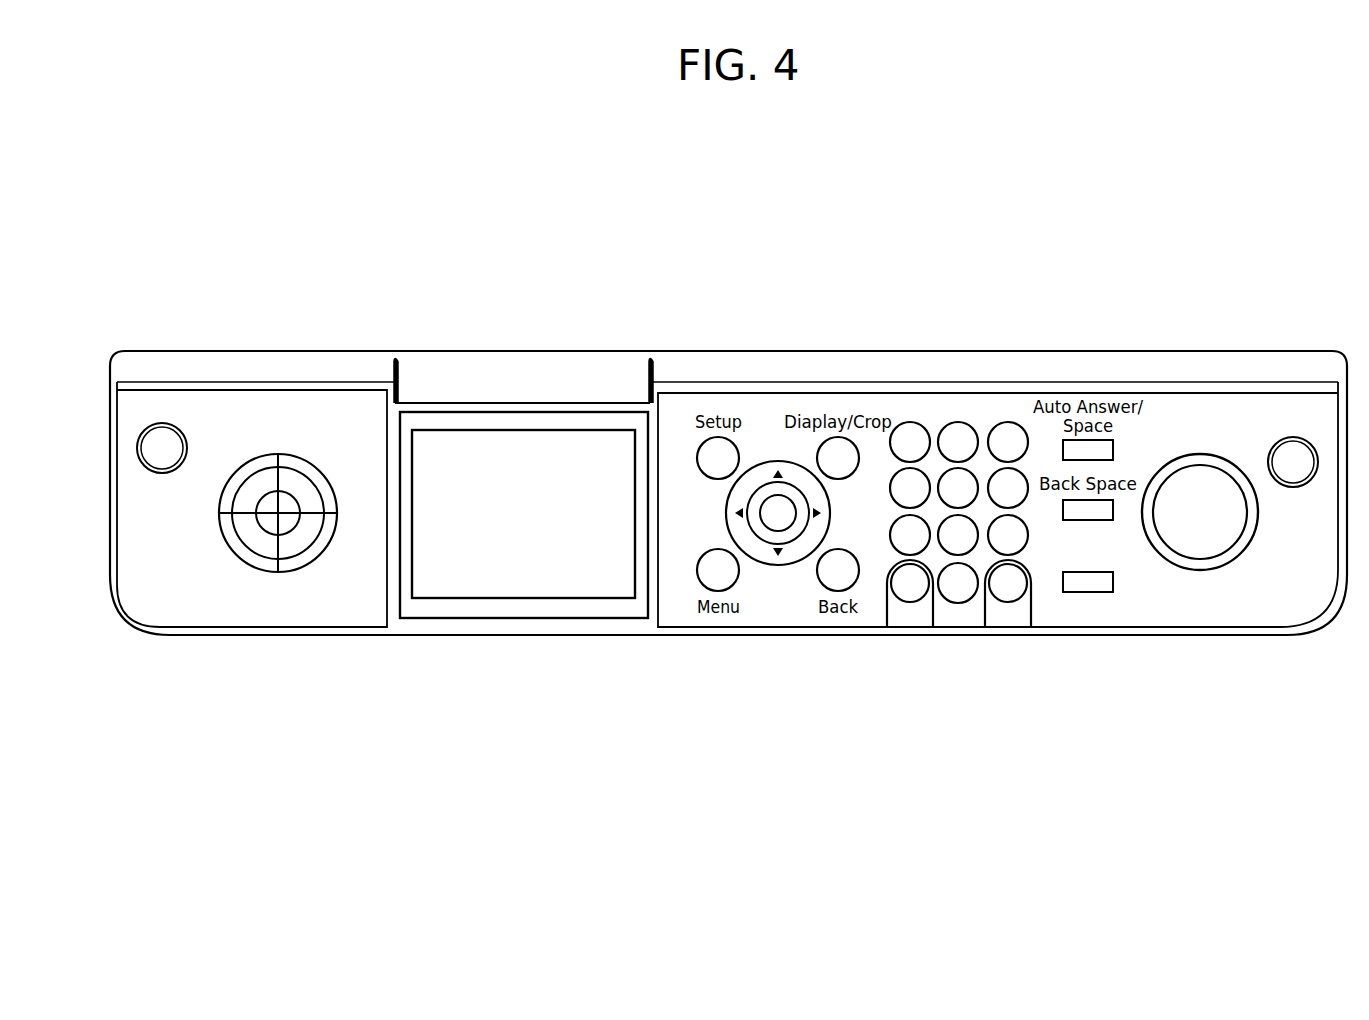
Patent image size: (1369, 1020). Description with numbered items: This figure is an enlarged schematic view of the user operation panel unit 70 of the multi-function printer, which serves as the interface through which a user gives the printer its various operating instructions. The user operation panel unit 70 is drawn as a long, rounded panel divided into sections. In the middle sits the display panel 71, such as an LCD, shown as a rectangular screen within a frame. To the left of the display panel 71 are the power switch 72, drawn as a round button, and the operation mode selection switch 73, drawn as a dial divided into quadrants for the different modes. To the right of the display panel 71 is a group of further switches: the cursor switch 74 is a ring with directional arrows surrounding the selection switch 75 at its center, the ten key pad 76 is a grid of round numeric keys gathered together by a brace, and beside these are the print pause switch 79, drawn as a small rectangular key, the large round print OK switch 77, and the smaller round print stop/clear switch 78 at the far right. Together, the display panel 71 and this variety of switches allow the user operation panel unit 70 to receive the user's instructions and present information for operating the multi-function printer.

The user operation panel unit 70 is at (1050, 351).
The display panel 71 is at (527, 598).
The power switch 72 is at (163, 474).
The operation mode selection switch 73 is at (278, 576).
The cursor switch 74 is at (776, 566).
The selection switch 75 is at (792, 520).
The ten key pad 76 is at (1042, 638).
The print OK switch 77 is at (1205, 570).
The print stop/clear switch 78 is at (1296, 487).
The print pause switch 79 is at (1090, 592).